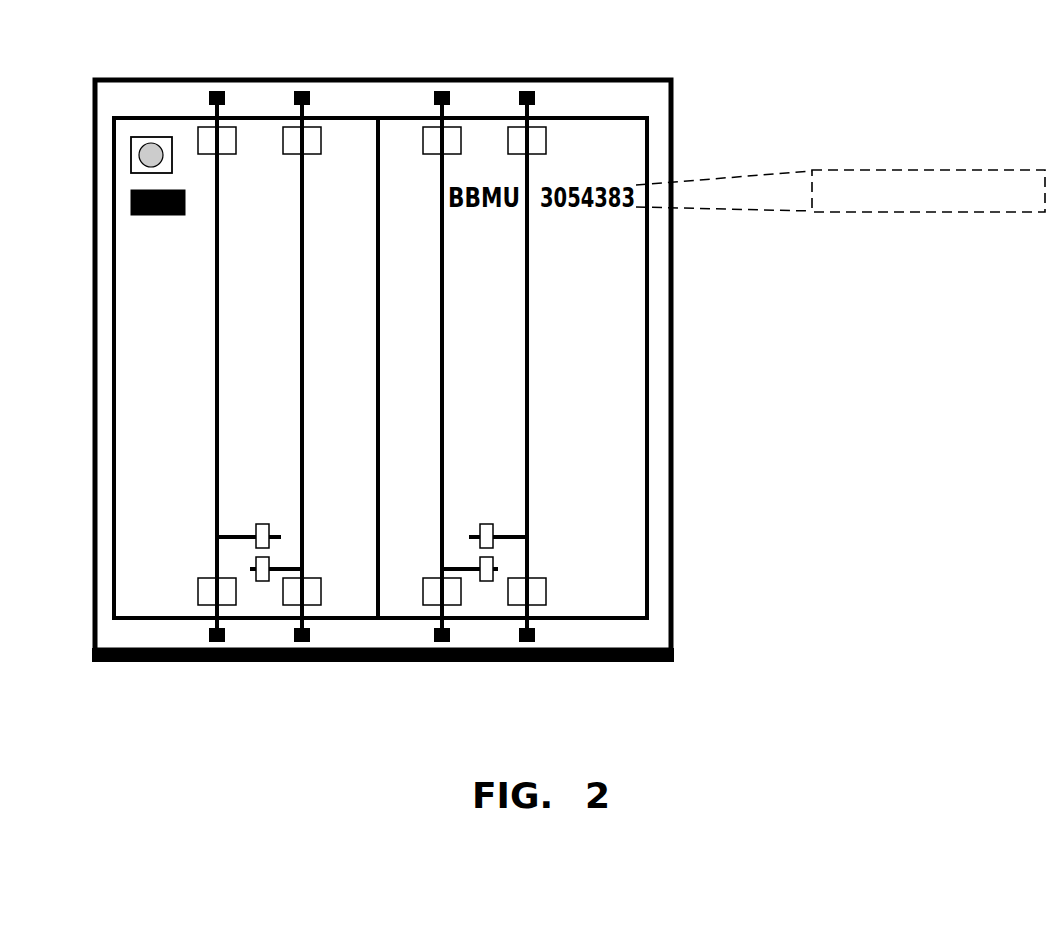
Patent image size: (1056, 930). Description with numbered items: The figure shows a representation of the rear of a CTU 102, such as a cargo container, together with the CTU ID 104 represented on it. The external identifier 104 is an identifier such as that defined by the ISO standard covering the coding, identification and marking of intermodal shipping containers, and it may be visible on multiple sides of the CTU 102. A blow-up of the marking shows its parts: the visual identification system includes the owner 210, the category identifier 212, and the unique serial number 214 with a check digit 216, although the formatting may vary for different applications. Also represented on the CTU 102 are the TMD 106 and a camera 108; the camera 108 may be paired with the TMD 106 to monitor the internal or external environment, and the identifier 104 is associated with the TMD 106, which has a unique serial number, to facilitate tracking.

The CTU 102 is at (168, 78).
The CTU ID 104 is at (860, 170).
The TMD 106 is at (131, 203).
The camera 108 is at (131, 150).
The owner 210 is at (889, 214).
The category identifier 212 is at (903, 213).
The unique serial number 214 is at (1013, 214).
The check digit 216 is at (1026, 213).